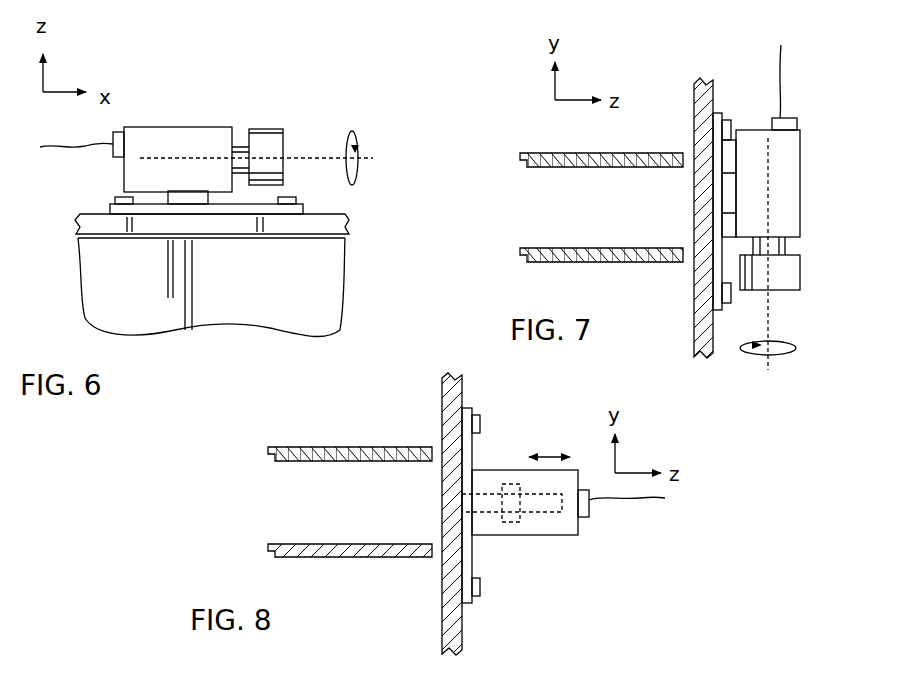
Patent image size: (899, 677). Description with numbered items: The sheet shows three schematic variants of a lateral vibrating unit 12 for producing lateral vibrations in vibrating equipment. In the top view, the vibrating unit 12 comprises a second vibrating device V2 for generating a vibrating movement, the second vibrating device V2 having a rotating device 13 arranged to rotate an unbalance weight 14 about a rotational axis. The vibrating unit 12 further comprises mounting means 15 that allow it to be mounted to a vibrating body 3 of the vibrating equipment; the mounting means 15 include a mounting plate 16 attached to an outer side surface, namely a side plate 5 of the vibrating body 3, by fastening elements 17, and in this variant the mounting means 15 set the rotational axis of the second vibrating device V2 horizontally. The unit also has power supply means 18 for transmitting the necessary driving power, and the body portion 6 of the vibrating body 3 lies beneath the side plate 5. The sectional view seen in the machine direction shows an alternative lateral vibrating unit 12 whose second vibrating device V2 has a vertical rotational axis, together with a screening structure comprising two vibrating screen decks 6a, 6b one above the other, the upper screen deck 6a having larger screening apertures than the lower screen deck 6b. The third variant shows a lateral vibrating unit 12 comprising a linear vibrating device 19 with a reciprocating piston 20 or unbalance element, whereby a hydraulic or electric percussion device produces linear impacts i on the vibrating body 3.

In FIG. 6, the vibrating body 3 is at (368, 249).
In FIG. 8, the vibrating body 3 is at (416, 591).
In FIG. 6, the side plate 5 is at (76, 225).
In FIG. 7, the side plate 5 is at (698, 285).
In FIG. 8, the side plate 5 is at (450, 400).
In FIG. 6, the body of the structure 6 is at (248, 310).
In FIG. 7, the upper screen deck 6a is at (501, 162).
In FIG. 8, the upper screen deck 6a is at (254, 458).
In FIG. 7, the lower screen deck 6b is at (501, 256).
In FIG. 8, the lower screen deck 6b is at (249, 558).
In FIG. 6, the lateral vibrating unit 12 is at (143, 66).
In FIG. 7, the lateral vibrating unit 12 is at (737, 83).
In FIG. 8, the lateral vibrating unit 12 is at (628, 606).
In FIG. 6, the rotating device 13 is at (160, 145).
In FIG. 7, the rotating device 13 is at (790, 160).
In FIG. 6, the unbalance weight 14 is at (268, 142).
In FIG. 7, the unbalance weight 14 is at (782, 268).
In FIG. 6, the mounting means 15 is at (368, 224).
In FIG. 7, the mounting means 15 is at (716, 167).
In FIG. 8, the mounting means 15 is at (482, 443).
In FIG. 6, the mounting plate 16 is at (113, 208).
In FIG. 6, the fastening elements 17 is at (290, 197).
In FIG. 6, the power supply means 18 is at (97, 156).
In FIG. 7, the power supply means 18 is at (801, 104).
In FIG. 8, the power supply means 18 is at (605, 528).
In FIG. 8, the linear vibrating device 19 is at (577, 565).
In FIG. 8, the reciprocating piston 20 is at (535, 512).
In FIG. 6, the second vibrating device V2 is at (206, 80).
In FIG. 7, the second vibrating device V2 is at (812, 347).
In FIG. 8, the second vibrating device V2 is at (505, 587).
In FIG. 8, the linear impacts i is at (549, 442).